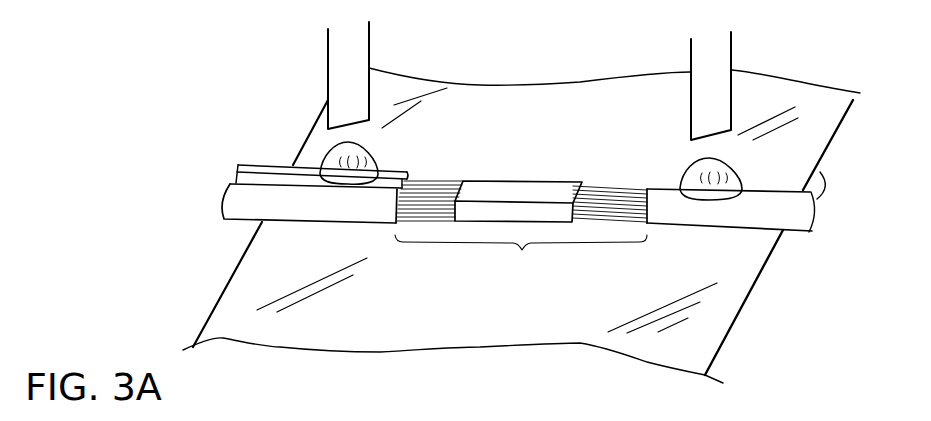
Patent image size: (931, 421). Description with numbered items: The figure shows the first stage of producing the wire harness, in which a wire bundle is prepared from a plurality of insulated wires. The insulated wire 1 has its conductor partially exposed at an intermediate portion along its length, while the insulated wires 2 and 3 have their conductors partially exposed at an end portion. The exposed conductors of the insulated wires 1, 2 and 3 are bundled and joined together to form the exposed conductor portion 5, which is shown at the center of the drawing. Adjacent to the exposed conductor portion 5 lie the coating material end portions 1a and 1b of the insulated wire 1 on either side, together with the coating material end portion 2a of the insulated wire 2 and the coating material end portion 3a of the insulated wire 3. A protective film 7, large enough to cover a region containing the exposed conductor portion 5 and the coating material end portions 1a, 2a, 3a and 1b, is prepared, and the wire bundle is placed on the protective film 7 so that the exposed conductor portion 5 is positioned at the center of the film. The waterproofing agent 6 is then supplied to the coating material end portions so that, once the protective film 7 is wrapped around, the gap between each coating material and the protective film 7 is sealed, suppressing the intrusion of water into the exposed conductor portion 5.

The insulated wire 1 is at (268, 175).
The coating material end portion 1a is at (398, 167).
The coating material end portion 1b is at (675, 207).
The insulated wire 2 is at (238, 165).
The coating material end portion 2a is at (390, 182).
The insulated wire 3 is at (240, 203).
The coating material end portion 3a is at (358, 205).
The exposed conductor portion 5 is at (521, 230).
The waterproofing agent 6 is at (362, 157).
The protective film 7 is at (723, 317).